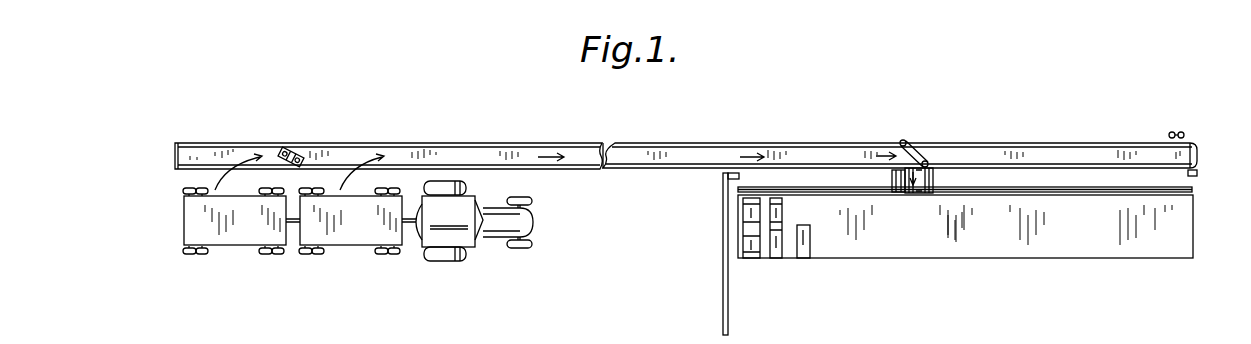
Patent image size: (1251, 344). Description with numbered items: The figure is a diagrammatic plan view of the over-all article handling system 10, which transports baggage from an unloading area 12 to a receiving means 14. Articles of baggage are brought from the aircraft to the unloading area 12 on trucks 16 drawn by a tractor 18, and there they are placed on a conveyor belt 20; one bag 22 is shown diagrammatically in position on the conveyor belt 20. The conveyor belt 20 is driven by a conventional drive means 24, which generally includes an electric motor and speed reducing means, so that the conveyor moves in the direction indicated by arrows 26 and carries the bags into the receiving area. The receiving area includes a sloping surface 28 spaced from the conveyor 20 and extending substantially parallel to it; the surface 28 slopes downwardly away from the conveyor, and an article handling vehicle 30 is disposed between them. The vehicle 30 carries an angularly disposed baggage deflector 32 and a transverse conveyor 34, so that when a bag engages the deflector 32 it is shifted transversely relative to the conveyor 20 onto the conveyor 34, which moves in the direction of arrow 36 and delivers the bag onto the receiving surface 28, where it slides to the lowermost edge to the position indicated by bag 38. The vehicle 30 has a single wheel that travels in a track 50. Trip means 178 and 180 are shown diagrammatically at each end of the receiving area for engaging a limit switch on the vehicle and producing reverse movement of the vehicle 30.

The article handling system 10 is at (768, 93).
The unloading area 12 is at (286, 140).
The receiving means 14 is at (966, 238).
The trucks 16 is at (237, 238).
The tractor 18 is at (498, 240).
The conveyor belt 20 is at (513, 156).
The bag 22 is at (300, 158).
The drive means 24 is at (1174, 132).
The arrows 26 is at (553, 157).
The sloping surface 28 is at (1112, 247).
The article handling vehicle 30 is at (937, 178).
The baggage deflector 32 is at (913, 148).
The transverse conveyor 34 is at (921, 194).
The arrow 36 is at (905, 192).
The bag 38 is at (812, 244).
The track 50 is at (1110, 188).
The trip means 178 is at (728, 178).
The trip means 180 is at (1197, 173).